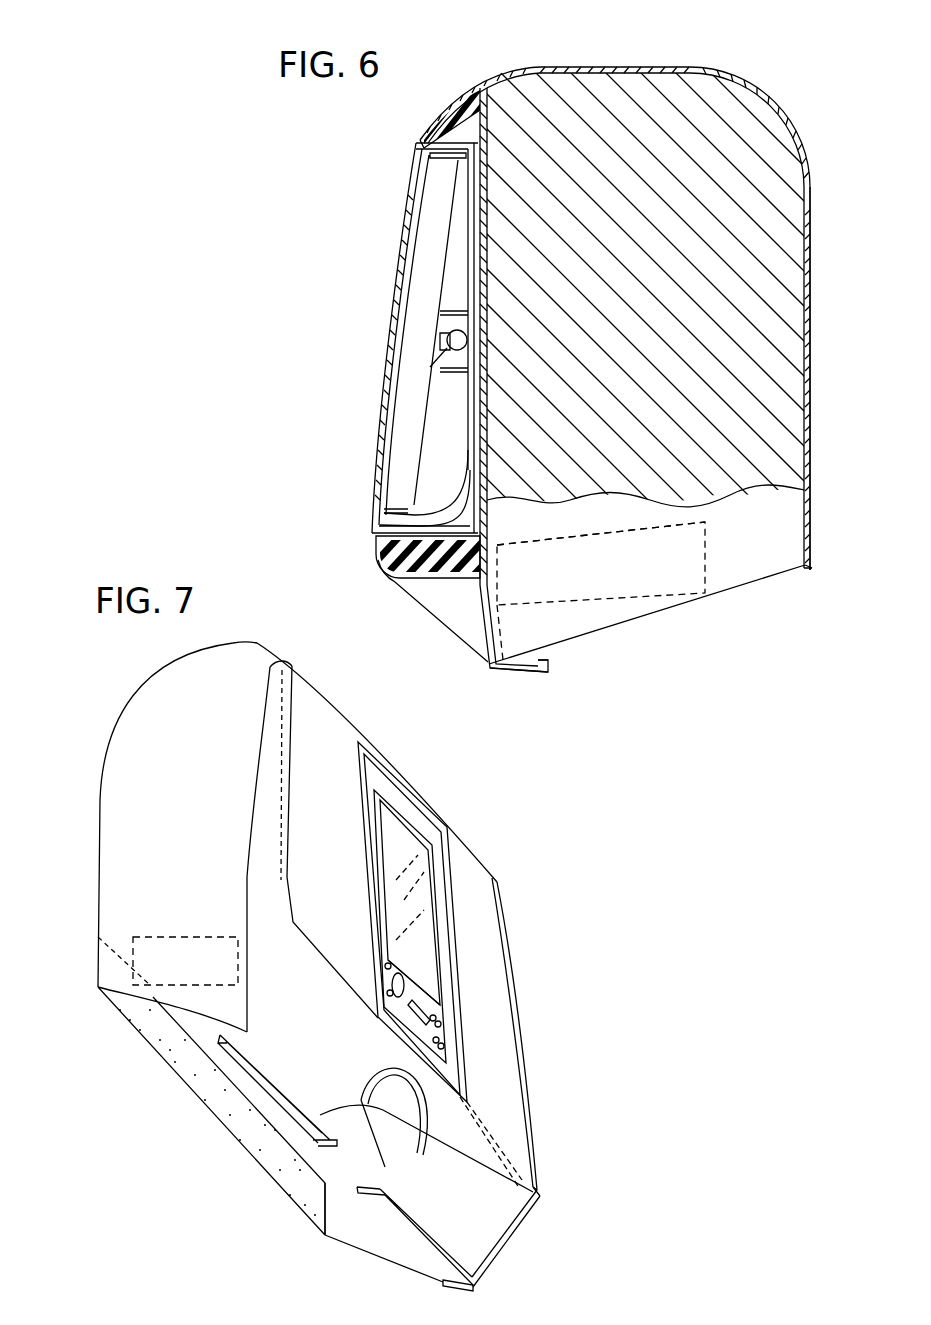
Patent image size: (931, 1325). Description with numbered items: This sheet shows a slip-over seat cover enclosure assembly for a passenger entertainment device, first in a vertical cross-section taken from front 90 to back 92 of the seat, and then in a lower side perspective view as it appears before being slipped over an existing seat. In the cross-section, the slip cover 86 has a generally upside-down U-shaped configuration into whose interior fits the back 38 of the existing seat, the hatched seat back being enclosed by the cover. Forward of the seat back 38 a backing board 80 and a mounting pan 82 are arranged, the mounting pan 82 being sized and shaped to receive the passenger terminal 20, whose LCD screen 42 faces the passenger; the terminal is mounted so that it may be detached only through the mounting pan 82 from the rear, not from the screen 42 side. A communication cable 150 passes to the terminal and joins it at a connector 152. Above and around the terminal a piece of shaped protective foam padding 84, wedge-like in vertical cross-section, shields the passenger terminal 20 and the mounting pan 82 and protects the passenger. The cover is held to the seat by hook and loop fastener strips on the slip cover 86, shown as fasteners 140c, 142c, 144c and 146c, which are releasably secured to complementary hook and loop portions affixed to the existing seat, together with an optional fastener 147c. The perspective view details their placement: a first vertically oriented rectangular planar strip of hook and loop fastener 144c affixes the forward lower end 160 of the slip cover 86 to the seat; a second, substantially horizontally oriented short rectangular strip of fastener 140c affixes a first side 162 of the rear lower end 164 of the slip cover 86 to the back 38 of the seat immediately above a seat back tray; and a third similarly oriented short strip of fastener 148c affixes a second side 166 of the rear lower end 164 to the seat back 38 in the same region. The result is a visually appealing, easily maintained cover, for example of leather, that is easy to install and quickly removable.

In FIG. 6, the passenger terminal 20 is at (442, 222).
In FIG. 7, the passenger terminal 20 is at (420, 825).
In FIG. 6, the back of the existing seat 38 is at (526, 100).
In FIG. 7, the LCD screen 42 is at (417, 867).
In FIG. 6, the backing board 80 is at (470, 110).
In FIG. 6, the mounting pan 82 is at (416, 142).
In FIG. 6, the protective foam padding 84 is at (440, 108).
In FIG. 6, the slip cover 86 is at (583, 67).
In FIG. 7, the slip cover 86 is at (270, 664).
In FIG. 6, the front 90 is at (812, 350).
In FIG. 6, the back 92 is at (398, 562).
In FIG. 6, the communication cable 150 is at (447, 340).
In FIG. 6, the connector 152 is at (458, 355).
In FIG. 7, the hook and loop fastener 140c is at (443, 1282).
In FIG. 7, the hook and loop fastener 142c is at (397, 1245).
In FIG. 6, the hook and loop fastener 144c is at (808, 578).
In FIG. 7, the hook and loop fastener 144c is at (267, 1175).
In FIG. 6, the hook and loop fastener 146c is at (632, 590).
In FIG. 7, the hook and loop fastener 146c is at (143, 950).
In FIG. 6, the optional fastener 147c is at (510, 640).
In FIG. 6, the hook and loop fastener 148c is at (540, 665).
In FIG. 7, the hook and loop fastener 148c is at (267, 1080).
In FIG. 7, the forward lower end 160 is at (243, 1152).
In FIG. 7, the first side 162 is at (443, 1253).
In FIG. 7, the rear lower end 164 is at (603, 1177).
In FIG. 7, the second side 166 is at (538, 1190).